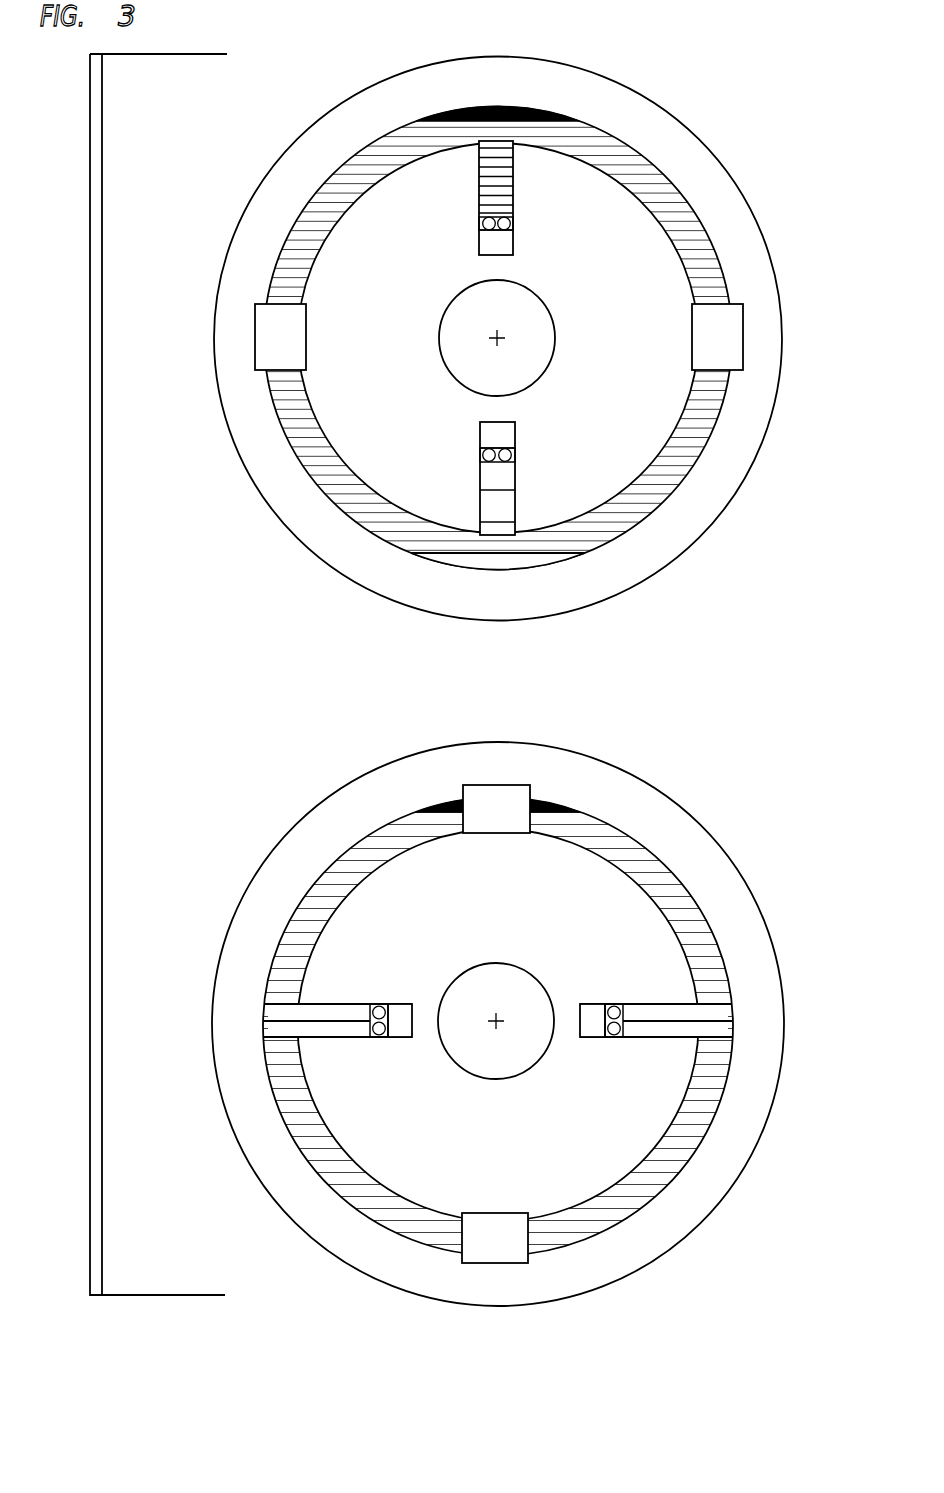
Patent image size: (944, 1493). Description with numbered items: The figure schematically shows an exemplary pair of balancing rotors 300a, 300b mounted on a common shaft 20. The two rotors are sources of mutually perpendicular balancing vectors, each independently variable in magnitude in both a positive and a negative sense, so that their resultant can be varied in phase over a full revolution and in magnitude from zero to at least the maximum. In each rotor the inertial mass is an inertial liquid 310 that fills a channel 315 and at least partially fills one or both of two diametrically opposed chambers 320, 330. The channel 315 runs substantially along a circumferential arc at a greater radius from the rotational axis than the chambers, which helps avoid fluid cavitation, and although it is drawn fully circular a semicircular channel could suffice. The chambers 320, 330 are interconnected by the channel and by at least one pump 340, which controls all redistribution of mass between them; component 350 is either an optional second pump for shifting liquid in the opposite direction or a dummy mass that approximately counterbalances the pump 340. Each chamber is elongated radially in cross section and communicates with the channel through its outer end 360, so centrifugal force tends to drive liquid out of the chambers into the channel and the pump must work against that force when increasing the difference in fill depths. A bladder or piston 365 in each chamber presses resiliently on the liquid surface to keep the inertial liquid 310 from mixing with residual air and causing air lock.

The shaft 20 is at (550, 306).
The balancing rotor 300a is at (745, 200).
The balancing rotor 300b is at (745, 885).
The inertial liquid 310 is at (633, 528).
The channel 315 is at (632, 148).
The chamber 320 is at (515, 243).
The chamber 330 is at (515, 438).
The pump 340 is at (743, 343).
The second pump or dummy mass 350 is at (255, 343).
The outer end 360 is at (497, 570).
The bladder or piston 365 is at (483, 225).